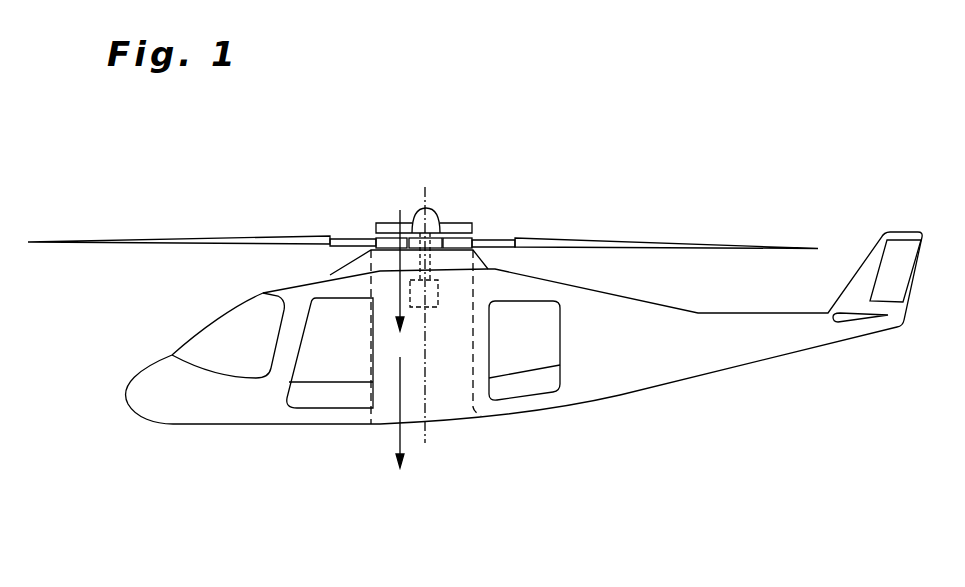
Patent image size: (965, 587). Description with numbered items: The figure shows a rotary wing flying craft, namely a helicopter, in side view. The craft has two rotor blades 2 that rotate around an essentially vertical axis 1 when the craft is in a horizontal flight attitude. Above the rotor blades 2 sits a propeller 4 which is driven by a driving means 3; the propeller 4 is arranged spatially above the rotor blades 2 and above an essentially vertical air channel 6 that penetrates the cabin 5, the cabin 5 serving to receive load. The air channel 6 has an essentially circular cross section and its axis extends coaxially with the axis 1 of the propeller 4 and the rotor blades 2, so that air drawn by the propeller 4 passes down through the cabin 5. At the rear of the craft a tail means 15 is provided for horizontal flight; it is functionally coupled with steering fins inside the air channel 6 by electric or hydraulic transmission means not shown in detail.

The axis 1 is at (427, 200).
The rotor blades 2 is at (637, 242).
The driving means 3 is at (415, 232).
The propeller 4 is at (470, 225).
The cabin 5 is at (205, 410).
The air channel 6 is at (370, 353).
The tail means 15 is at (897, 292).